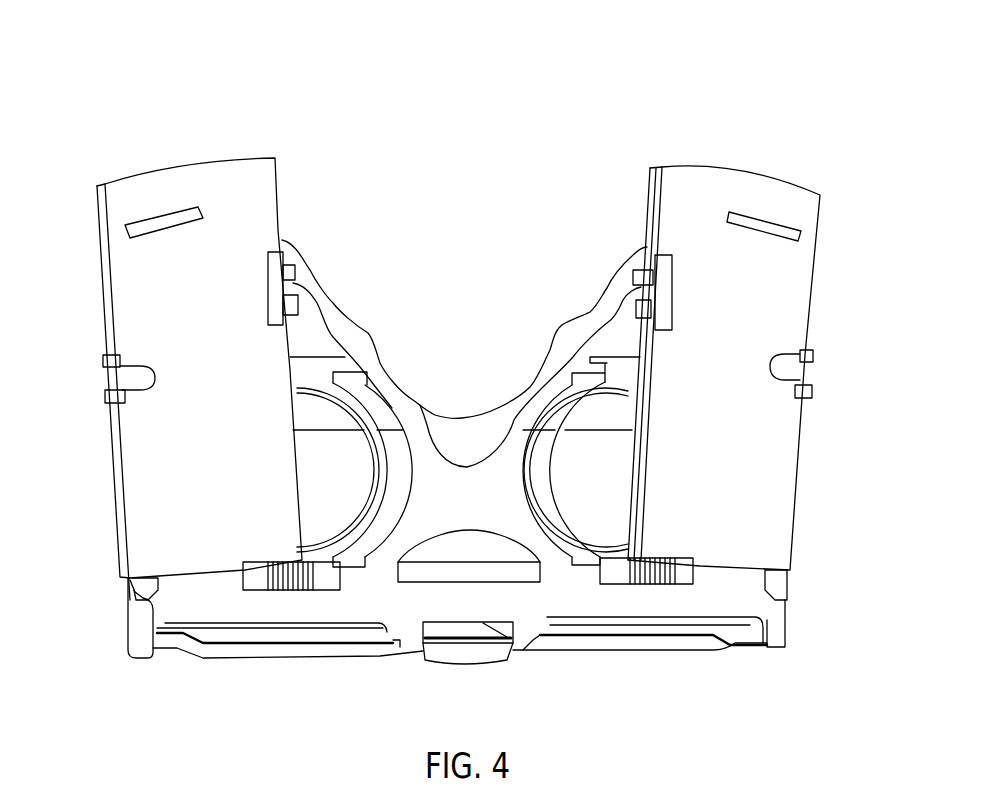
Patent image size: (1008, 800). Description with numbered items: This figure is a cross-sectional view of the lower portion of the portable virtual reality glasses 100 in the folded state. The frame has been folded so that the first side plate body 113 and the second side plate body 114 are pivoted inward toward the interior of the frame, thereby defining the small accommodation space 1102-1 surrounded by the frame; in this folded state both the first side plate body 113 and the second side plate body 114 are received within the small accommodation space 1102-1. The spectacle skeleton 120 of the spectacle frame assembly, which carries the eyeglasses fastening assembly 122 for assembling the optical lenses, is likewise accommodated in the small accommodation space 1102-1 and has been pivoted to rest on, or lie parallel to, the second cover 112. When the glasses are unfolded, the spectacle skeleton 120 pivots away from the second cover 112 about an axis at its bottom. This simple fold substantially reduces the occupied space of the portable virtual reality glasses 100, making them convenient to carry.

The portable virtual reality glasses 100 is at (162, 93).
The second cover 112 is at (318, 283).
The first side plate body 113 is at (824, 305).
The second side plate body 114 is at (96, 306).
The spectacle skeleton 120 is at (485, 493).
The eyeglasses fastening assembly 122 is at (320, 370).
The small accommodation space 1102-1 is at (512, 326).